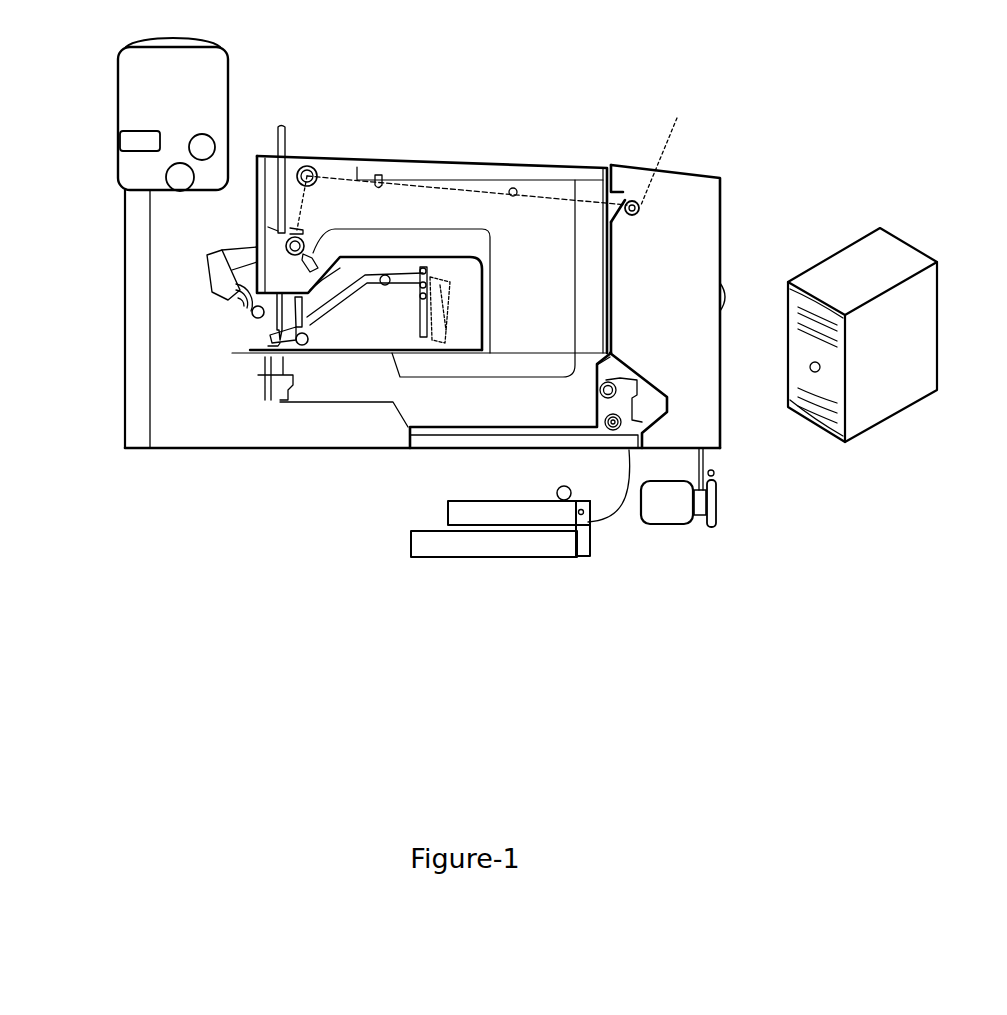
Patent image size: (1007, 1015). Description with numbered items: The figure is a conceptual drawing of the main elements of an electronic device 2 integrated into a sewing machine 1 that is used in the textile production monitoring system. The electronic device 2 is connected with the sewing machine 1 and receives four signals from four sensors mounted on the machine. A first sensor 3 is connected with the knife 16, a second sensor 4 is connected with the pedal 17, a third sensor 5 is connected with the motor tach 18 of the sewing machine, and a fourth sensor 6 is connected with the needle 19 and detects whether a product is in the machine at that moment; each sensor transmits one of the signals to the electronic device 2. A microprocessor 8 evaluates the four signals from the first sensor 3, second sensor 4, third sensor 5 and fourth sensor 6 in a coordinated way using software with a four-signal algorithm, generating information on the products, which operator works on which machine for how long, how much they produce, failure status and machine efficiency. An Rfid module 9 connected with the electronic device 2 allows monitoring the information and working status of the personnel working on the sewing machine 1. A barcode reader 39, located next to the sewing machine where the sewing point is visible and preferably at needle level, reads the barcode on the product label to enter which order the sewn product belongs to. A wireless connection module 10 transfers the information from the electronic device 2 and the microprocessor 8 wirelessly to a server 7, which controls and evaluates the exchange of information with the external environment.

The sewing machine 1 is at (543, 172).
The electronic device 2 is at (205, 82).
The first sensor 3 is at (307, 344).
The second sensor 4 is at (557, 495).
The third sensor 5 is at (714, 474).
The fourth sensor 6 is at (252, 314).
The server 7 is at (852, 272).
The microprocessor 8 is at (200, 147).
The Rfid module 9 is at (180, 177).
The wireless connection module 10 is at (130, 137).
The knife 16 is at (288, 333).
The pedal 17 is at (545, 540).
The motor tach 18 is at (700, 527).
The needle 19 is at (270, 332).
The barcode reader 39 is at (217, 282).